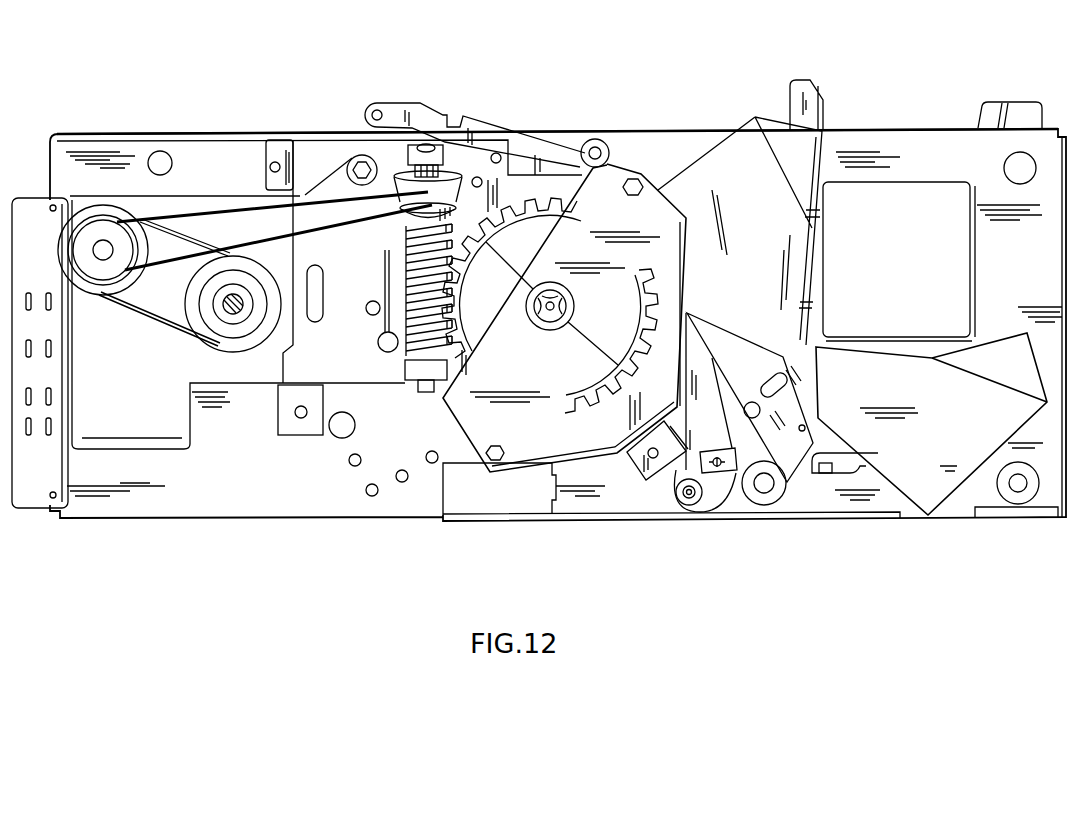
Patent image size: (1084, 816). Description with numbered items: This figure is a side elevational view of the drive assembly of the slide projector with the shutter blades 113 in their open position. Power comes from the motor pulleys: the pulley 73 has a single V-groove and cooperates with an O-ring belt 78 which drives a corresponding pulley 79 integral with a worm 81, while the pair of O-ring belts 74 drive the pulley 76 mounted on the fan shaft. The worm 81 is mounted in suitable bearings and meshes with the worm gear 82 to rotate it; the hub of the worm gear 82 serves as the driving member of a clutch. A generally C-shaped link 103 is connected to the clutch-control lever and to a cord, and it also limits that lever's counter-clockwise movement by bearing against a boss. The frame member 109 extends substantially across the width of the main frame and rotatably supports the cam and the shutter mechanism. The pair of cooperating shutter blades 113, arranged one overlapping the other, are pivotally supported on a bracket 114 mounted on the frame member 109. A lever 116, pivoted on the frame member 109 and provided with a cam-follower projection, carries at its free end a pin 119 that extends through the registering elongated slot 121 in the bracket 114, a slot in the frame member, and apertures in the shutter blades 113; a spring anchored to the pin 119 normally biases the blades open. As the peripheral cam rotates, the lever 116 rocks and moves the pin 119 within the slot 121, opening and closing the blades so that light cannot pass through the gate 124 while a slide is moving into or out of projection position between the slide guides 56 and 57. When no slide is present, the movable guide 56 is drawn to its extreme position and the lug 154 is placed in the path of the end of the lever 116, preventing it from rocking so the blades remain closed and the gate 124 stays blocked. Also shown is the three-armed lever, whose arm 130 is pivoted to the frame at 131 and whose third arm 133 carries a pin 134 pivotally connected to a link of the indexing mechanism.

The slide guide 56 is at (1028, 104).
The slide guide 57 is at (815, 82).
The pulley 73 is at (86, 234).
The O-ring belts 74 is at (147, 337).
The pulley 76 is at (236, 348).
The O-ring belt 78 is at (192, 216).
The pulley 79 is at (448, 178).
The worm 81 is at (404, 242).
The worm gear 82 is at (506, 297).
The C-shaped link 103 is at (433, 110).
The frame member 109 is at (283, 496).
The shutter blades 113 is at (752, 268).
The bracket 114 is at (795, 397).
The lever 116 is at (793, 458).
The pin 119 is at (748, 476).
The elongated slot 121 is at (777, 375).
The gate 124 is at (972, 254).
The arm 130 is at (718, 429).
The pivot 131 is at (686, 500).
The third arm 133 is at (612, 162).
The pin 134 is at (597, 140).
The lug 154 is at (828, 473).